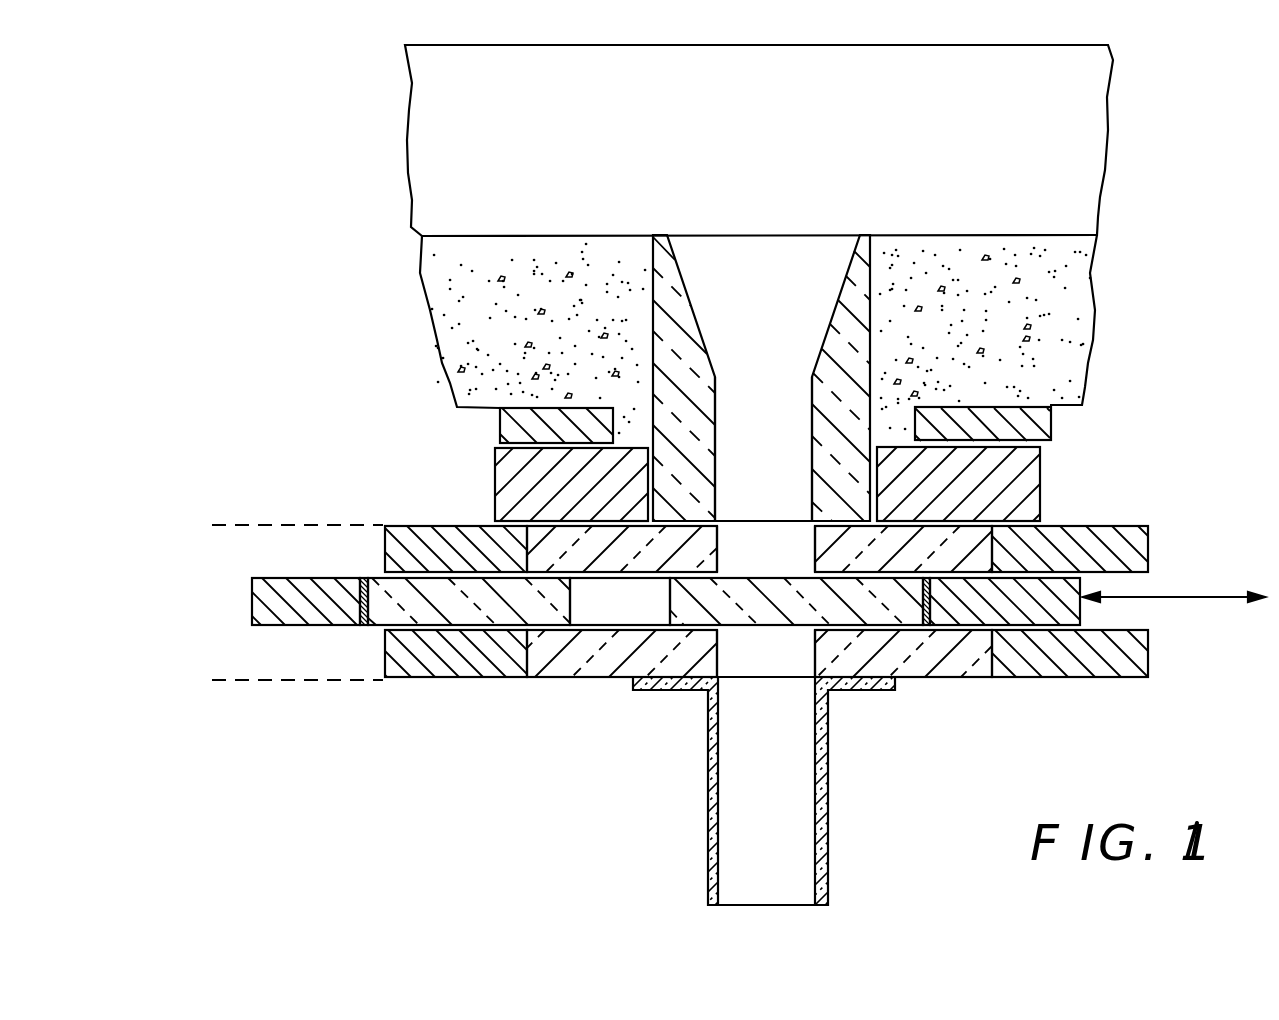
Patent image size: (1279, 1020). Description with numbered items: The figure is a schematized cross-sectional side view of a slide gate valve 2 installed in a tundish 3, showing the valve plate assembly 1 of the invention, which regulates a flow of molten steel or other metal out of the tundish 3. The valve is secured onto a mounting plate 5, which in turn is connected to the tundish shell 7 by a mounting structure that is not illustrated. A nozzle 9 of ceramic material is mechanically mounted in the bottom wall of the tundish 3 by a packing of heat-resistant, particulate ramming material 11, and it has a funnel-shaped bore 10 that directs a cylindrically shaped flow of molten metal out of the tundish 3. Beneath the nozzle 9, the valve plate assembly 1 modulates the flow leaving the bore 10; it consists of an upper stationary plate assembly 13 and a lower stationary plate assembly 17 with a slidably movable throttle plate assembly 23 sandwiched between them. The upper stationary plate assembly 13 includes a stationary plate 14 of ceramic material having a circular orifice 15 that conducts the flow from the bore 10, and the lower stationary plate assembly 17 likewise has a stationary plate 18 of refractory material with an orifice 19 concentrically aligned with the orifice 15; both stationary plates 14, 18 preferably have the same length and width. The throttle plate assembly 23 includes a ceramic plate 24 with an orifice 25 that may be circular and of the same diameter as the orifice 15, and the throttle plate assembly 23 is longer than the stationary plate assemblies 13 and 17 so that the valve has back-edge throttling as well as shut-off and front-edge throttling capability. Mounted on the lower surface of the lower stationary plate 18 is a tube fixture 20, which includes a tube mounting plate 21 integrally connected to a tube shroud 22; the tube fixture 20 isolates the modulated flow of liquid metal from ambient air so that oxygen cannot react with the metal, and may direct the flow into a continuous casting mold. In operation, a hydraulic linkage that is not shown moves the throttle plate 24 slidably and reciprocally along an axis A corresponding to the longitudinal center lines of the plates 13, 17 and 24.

The valve plate assembly 1 is at (212, 525).
The slide gate valve 2 is at (341, 486).
The tundish 3 is at (776, 152).
The mounting plate 5 is at (500, 486).
The tundish shell 7 is at (500, 430).
The nozzle 9 is at (742, 325).
The funnel-shaped bore 10 is at (717, 500).
The particulate ramming material 11 is at (440, 312).
The upper stationary plate assembly 13 is at (384, 552).
The upper stationary plate 14 is at (982, 518).
The circular orifice 15 is at (815, 555).
The lower stationary plate assembly 17 is at (384, 655).
The lower stationary plate 18 is at (951, 665).
The orifice 19 is at (815, 660).
The tube fixture 20 is at (740, 783).
The tube mounting plate 21 is at (667, 690).
The tube shroud 22 is at (708, 797).
The throttle plate assembly 23 is at (254, 607).
The throttle plate 24 is at (461, 613).
The orifice 25 is at (670, 608).
The axis A is at (1175, 597).